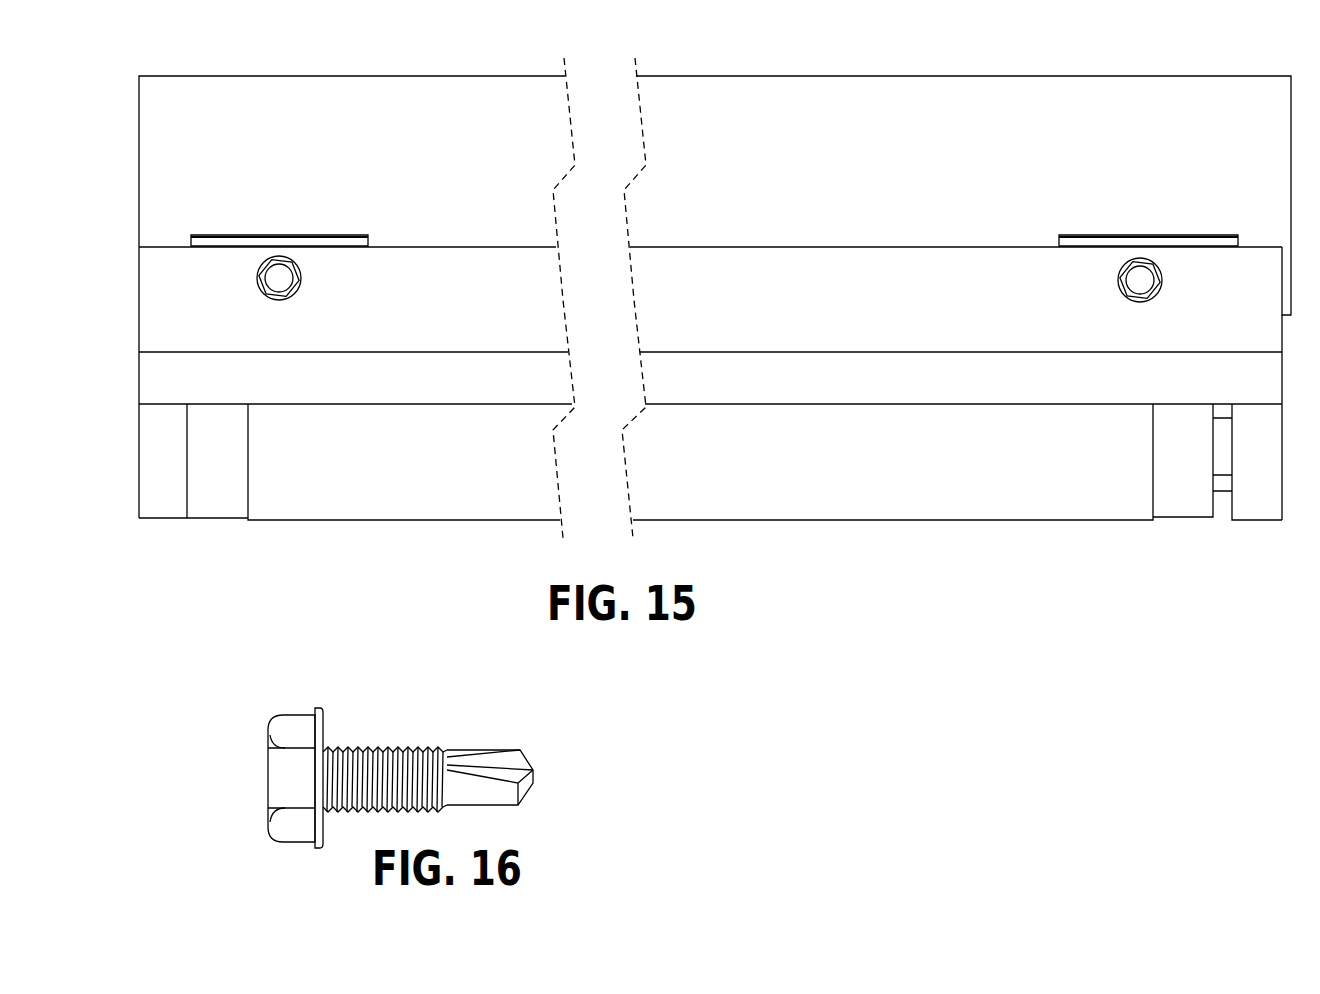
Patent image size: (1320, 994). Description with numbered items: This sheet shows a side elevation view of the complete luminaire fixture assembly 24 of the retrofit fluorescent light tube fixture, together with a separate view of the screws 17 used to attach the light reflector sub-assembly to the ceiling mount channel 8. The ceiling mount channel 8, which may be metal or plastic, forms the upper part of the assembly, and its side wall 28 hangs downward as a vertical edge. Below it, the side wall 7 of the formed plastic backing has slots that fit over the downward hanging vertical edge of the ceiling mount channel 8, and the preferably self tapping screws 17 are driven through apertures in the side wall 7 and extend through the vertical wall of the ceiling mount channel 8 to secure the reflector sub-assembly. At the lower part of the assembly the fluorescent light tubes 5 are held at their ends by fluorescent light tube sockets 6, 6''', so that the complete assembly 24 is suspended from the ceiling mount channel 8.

In FIG. 15, the fluorescent light tubes 5 is at (750, 522).
In FIG. 15, the fluorescent light tube socket 6 is at (193, 500).
In FIG. 15, the fluorescent light tube socket 6''' is at (1219, 500).
In FIG. 15, the side wall of plastic backing 7 is at (712, 287).
In FIG. 15, the ceiling mount channel 8 is at (387, 74).
In FIG. 15, the screws 17 is at (275, 262).
In FIG. 16, the screws 17 is at (520, 806).
In FIG. 15, the luminaire fixture assembly 24 is at (913, 550).
In FIG. 15, the side wall of ceiling mount channel 28 is at (463, 190).